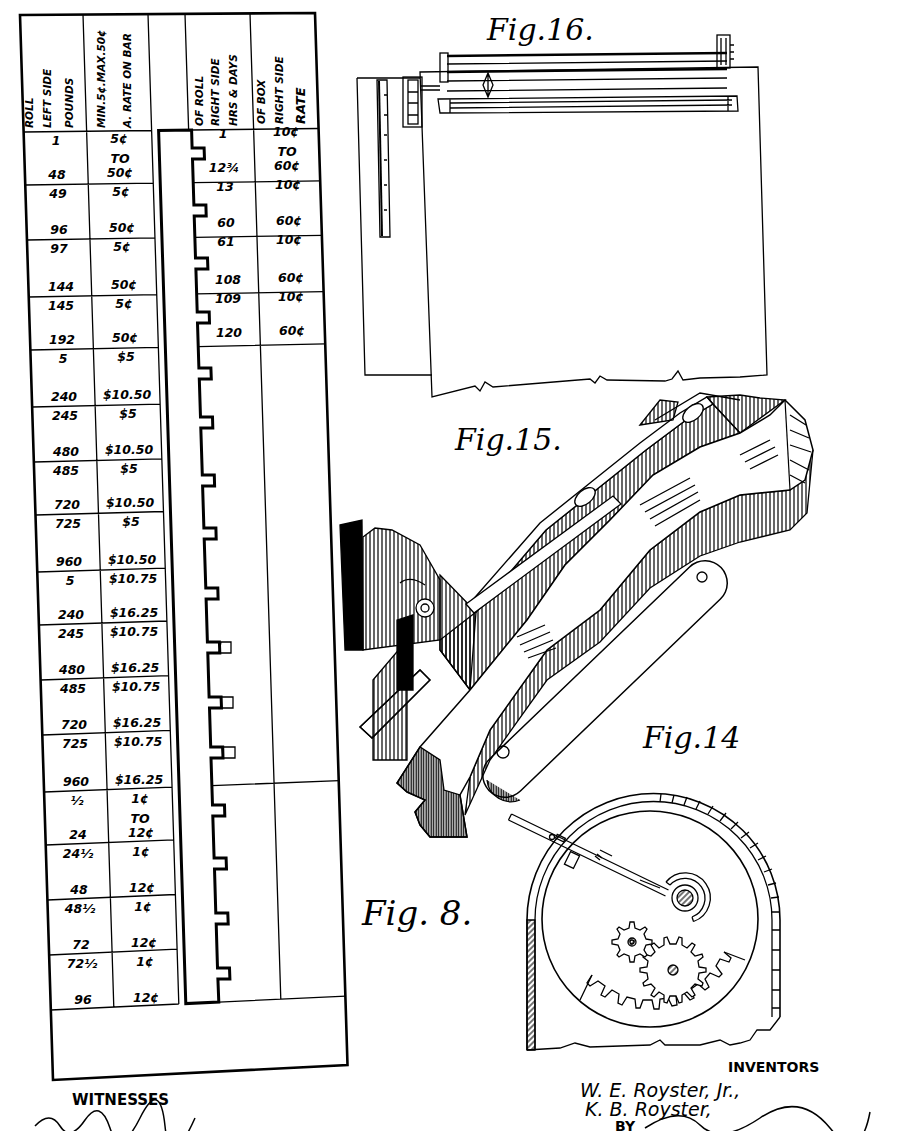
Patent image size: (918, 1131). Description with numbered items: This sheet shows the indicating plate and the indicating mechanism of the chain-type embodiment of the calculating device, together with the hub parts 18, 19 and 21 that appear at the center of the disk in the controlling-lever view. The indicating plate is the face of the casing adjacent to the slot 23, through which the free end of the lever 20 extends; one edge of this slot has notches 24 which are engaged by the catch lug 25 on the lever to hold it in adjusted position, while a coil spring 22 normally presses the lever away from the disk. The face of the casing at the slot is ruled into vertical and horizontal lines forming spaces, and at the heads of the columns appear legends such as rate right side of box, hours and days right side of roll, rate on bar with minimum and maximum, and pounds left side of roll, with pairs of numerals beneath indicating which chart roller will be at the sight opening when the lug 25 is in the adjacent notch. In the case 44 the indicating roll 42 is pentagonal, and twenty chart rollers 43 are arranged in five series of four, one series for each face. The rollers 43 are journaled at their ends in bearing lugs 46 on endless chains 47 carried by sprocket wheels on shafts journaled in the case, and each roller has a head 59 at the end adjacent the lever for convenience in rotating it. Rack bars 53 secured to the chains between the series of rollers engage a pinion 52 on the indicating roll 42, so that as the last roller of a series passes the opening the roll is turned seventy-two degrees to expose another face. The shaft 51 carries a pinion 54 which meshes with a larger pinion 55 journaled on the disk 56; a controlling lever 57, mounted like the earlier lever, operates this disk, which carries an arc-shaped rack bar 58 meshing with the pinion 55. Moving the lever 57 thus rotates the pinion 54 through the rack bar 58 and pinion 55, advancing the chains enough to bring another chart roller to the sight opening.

In FIG. 14, the shaft 18 is at (700, 912).
In FIG. 14, the collar 19 is at (687, 877).
In FIG. 14, the lever 20 is at (642, 878).
In FIG. 14, the stop pin 21 is at (603, 827).
In FIG. 14, the coil spring 22 is at (603, 852).
In FIG. 8, the slot 23 is at (168, 527).
In FIG. 8, the notches 24 is at (222, 748).
In FIG. 14, the catch lug 25 is at (563, 835).
In FIG. 16, the indicating roll 42 is at (717, 41).
In FIG. 15, the chart rollers 43 is at (418, 548).
In FIG. 16, the case 44 is at (562, 232).
In FIG. 14, the case 44 is at (527, 1001).
In FIG. 15, the bearing lugs 46 is at (430, 603).
In FIG. 15, the endless chains 47 is at (760, 548).
In FIG. 14, the shaft 51 is at (618, 947).
In FIG. 16, the pinion 52 is at (732, 44).
In FIG. 15, the rack bars 53 is at (660, 618).
In FIG. 14, the pinion 54 is at (612, 930).
In FIG. 14, the larger pinion 55 is at (693, 960).
In FIG. 14, the disk 56 is at (727, 860).
In FIG. 16, the controlling lever 57 is at (386, 128).
In FIG. 14, the controlling lever 57 is at (528, 822).
In FIG. 14, the arc-shaped rack bar 58 is at (745, 1007).
In FIG. 16, the head 59 is at (407, 80).